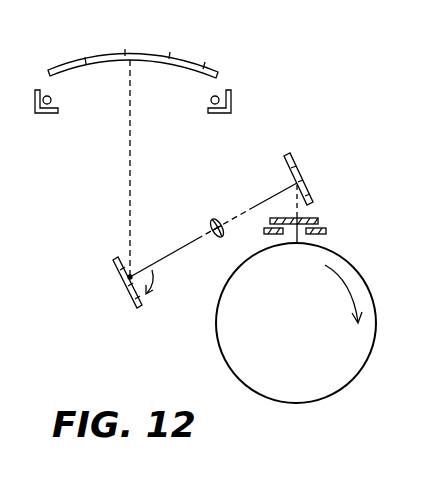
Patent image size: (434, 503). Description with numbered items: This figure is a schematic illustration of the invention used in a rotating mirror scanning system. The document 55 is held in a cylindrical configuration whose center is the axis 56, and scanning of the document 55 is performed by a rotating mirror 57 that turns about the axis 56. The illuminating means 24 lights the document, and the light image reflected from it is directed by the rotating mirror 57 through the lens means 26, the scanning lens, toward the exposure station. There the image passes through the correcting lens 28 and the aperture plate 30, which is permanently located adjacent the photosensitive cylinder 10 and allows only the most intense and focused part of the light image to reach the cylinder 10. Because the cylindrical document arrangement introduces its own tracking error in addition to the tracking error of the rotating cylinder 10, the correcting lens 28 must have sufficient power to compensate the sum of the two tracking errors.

The cylinder 10 is at (216, 350).
The illuminating means 24 is at (240, 108).
The lens means 26 is at (230, 212).
The correcting lens 28 is at (318, 217).
The aperture plate 30 is at (327, 231).
The document 55 is at (197, 70).
The axis 56 is at (133, 274).
The rotating mirror 57 is at (120, 298).